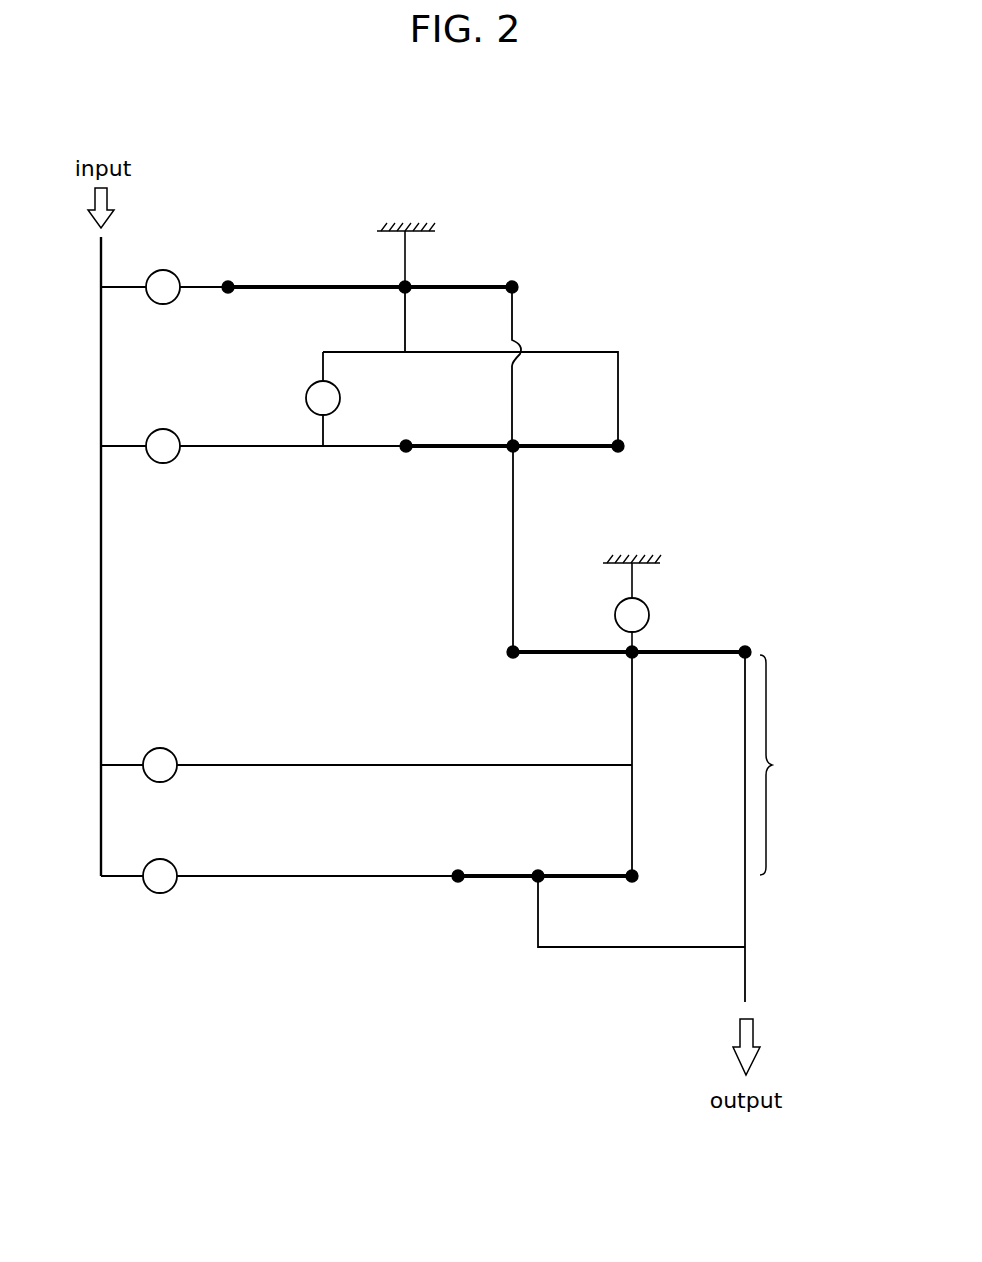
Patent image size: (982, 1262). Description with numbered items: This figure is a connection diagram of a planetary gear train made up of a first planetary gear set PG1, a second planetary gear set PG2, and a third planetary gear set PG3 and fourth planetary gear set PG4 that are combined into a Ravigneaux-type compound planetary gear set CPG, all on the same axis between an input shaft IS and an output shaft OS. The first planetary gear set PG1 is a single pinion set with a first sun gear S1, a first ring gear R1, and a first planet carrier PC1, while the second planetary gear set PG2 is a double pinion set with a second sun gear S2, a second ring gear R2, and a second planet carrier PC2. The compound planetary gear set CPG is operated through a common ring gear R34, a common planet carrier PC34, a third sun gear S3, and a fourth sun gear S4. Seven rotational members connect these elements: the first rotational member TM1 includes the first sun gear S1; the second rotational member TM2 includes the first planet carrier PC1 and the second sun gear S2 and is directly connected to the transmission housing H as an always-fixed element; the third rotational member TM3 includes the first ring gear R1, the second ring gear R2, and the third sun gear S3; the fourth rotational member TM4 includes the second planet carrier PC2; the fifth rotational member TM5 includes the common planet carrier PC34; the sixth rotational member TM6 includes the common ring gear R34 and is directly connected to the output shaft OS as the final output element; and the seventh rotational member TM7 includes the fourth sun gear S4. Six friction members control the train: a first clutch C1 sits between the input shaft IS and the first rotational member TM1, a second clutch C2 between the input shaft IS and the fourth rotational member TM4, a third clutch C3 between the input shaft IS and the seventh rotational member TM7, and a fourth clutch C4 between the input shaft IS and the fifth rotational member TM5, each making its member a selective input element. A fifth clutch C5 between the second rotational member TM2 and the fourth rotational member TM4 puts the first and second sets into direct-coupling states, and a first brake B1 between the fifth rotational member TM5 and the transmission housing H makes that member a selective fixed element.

The input shaft IS is at (101, 343).
The output shaft OS is at (747, 974).
The first clutch C1 is at (164, 287).
The second clutch C2 is at (253, 446).
The third clutch C3 is at (279, 876).
The fourth clutch C4 is at (366, 765).
The fifth clutch C5 is at (323, 398).
The first brake B1 is at (632, 625).
The transmission housing H is at (405, 231).
The first planetary gear set PG1 is at (266, 312).
The second planetary gear set PG2 is at (476, 468).
The third planetary gear set PG3 is at (546, 674).
The fourth planetary gear set PG4 is at (508, 909).
The compound planetary gear set CPG is at (791, 765).
The first sun gear S1 is at (228, 282).
The second sun gear S2 is at (621, 442).
The third sun gear S3 is at (508, 658).
The fourth sun gear S4 is at (457, 883).
The first planet carrier PC1 is at (403, 284).
The second planet carrier PC2 is at (406, 452).
The common planet carrier PC34 is at (630, 660).
The first ring gear R1 is at (512, 282).
The second ring gear R2 is at (516, 442).
The common ring gear R34 is at (743, 660).
The first rotational member TM1 is at (200, 289).
The second rotational member TM2 is at (440, 352).
The third rotational member TM3 is at (515, 490).
The fourth rotational member TM4 is at (357, 450).
The fifth rotational member TM5 is at (635, 788).
The sixth rotational member TM6 is at (744, 925).
The seventh rotational member TM7 is at (288, 878).